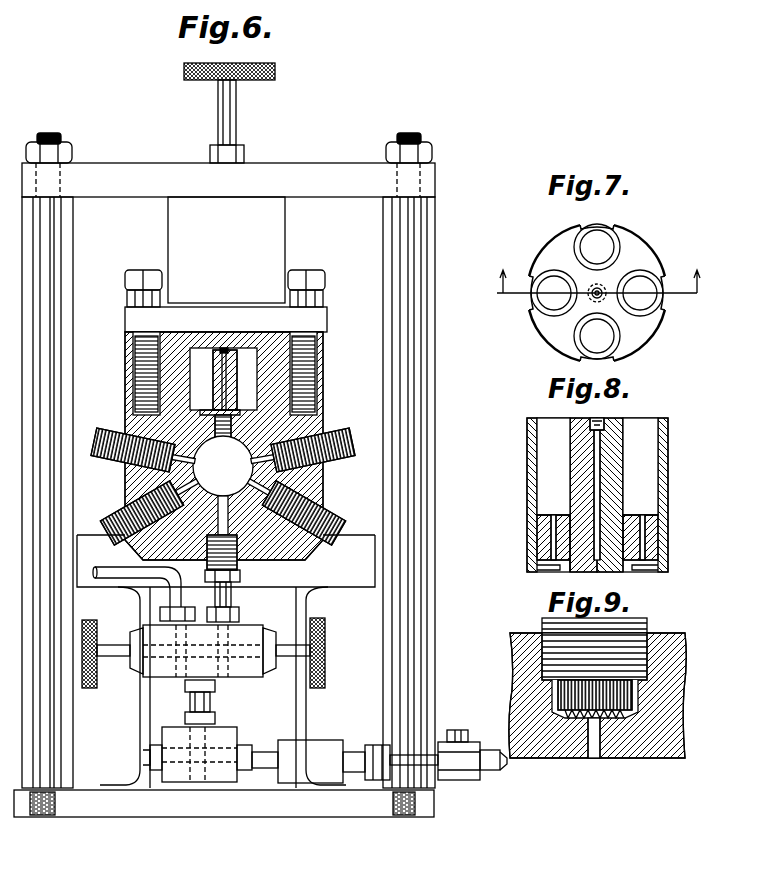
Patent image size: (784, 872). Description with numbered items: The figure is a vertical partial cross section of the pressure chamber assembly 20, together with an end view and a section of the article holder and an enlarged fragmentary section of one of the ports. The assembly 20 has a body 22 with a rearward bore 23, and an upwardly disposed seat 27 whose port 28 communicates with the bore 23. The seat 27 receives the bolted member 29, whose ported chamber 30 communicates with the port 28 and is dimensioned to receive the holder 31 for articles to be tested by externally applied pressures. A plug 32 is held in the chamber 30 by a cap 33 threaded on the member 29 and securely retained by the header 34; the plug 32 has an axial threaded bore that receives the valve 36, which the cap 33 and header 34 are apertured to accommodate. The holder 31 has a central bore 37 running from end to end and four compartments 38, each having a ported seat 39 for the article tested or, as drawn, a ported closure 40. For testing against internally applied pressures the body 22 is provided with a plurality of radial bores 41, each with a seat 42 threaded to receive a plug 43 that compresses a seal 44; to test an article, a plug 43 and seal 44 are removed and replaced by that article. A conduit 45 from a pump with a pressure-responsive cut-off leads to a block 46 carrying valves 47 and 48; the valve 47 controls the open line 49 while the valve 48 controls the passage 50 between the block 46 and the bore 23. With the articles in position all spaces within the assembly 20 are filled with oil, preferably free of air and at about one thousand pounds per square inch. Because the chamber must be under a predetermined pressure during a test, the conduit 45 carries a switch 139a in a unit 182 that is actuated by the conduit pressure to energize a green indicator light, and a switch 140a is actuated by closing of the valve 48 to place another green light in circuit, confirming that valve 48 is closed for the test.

In FIG. 6, the pressure chamber assembly 20 is at (123, 397).
In FIG. 6, the body 22 is at (318, 485).
In FIG. 9, the body 22 is at (685, 724).
In FIG. 6, the rearward bore 23 is at (320, 501).
In FIG. 6, the seat 27 is at (140, 363).
In FIG. 6, the port 28 is at (322, 430).
In FIG. 6, the member 29 is at (322, 344).
In FIG. 6, the ported chamber 30 is at (130, 347).
In FIG. 6, the holder 31 is at (247, 348).
In FIG. 7, the holder 31 is at (642, 243).
In FIG. 8, the holder 31 is at (668, 465).
In FIG. 6, the plug 32 is at (218, 348).
In FIG. 6, the cap 33 is at (285, 225).
In FIG. 6, the header 34 is at (315, 170).
In FIG. 6, the valve 36 is at (236, 118).
In FIG. 7, the bore 37 is at (604, 300).
In FIG. 8, the bore 37 is at (598, 452).
In FIG. 7, the compartments 38 is at (605, 240).
In FIG. 8, the compartments 38 is at (550, 485).
In FIG. 8, the ported seat 39 is at (548, 568).
In FIG. 8, the ported closure 40 is at (540, 538).
In FIG. 6, the radial bores 41 is at (150, 480).
In FIG. 9, the radial bores 41 is at (594, 752).
In FIG. 9, the seat 42 is at (557, 696).
In FIG. 6, the plug 43 is at (340, 447).
In FIG. 9, the plug 43 is at (648, 630).
In FIG. 9, the seal 44 is at (596, 700).
In FIG. 6, the conduit 45 is at (496, 772).
In FIG. 6, the block 46 is at (175, 675).
In FIG. 6, the valve 47 is at (113, 667).
In FIG. 6, the valve 48 is at (313, 653).
In FIG. 6, the open line 49 is at (118, 580).
In FIG. 6, the passage 50 is at (239, 605).
In FIG. 6, the switch 139a is at (455, 730).
In FIG. 6, the switch 140a is at (290, 702).
In FIG. 6, the unit 182 is at (462, 782).